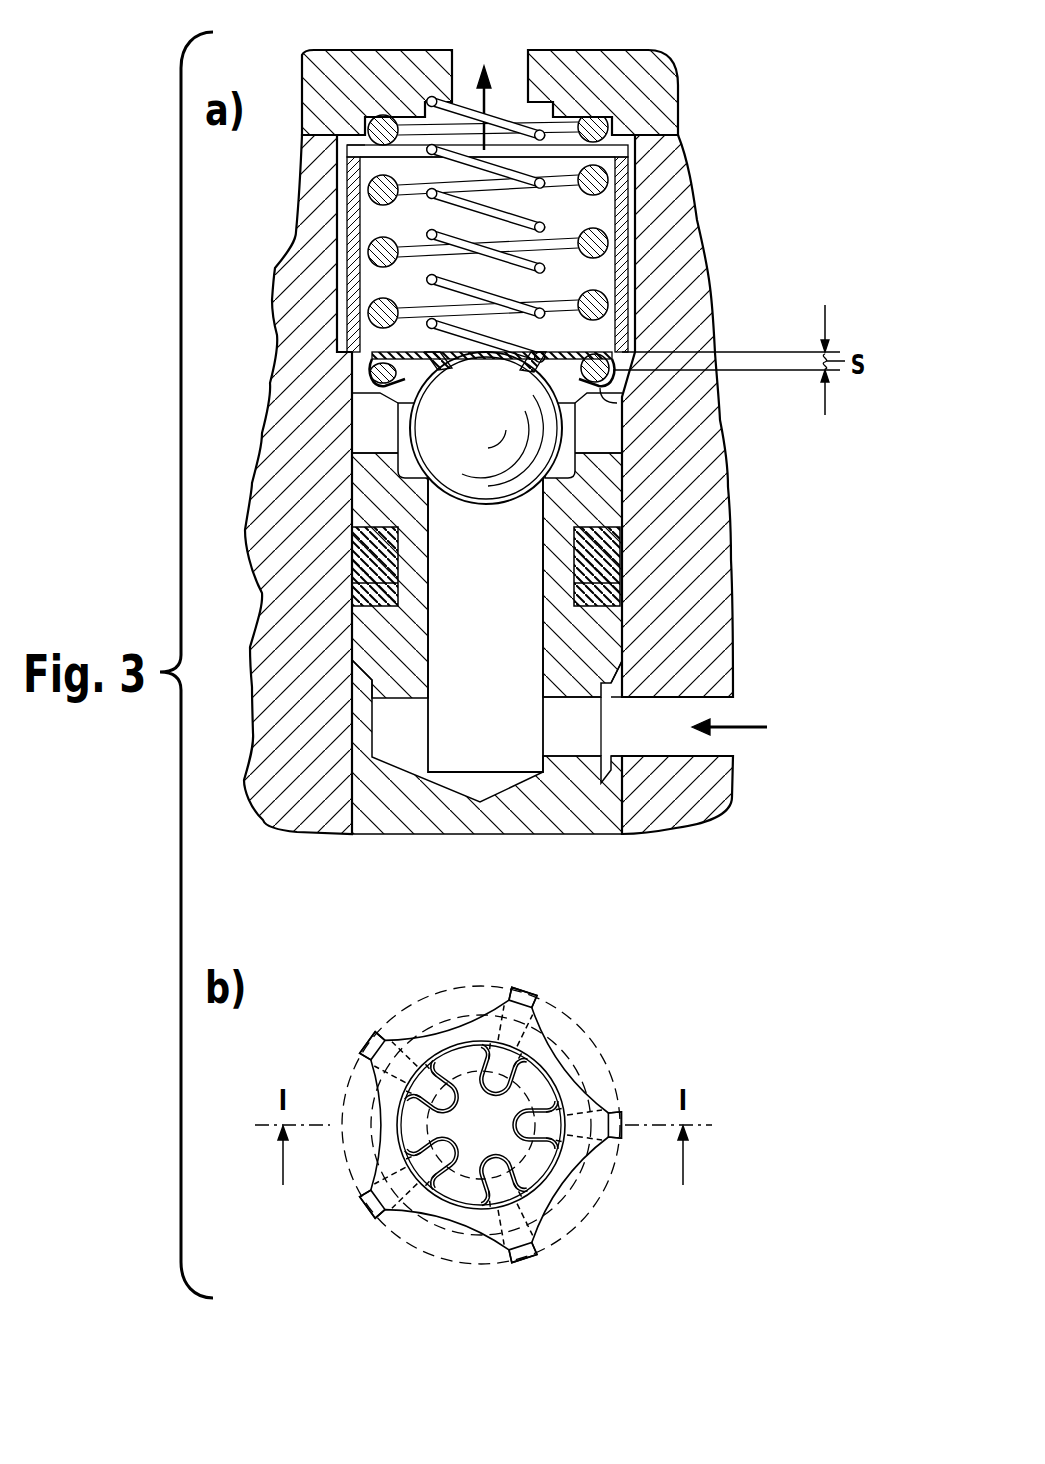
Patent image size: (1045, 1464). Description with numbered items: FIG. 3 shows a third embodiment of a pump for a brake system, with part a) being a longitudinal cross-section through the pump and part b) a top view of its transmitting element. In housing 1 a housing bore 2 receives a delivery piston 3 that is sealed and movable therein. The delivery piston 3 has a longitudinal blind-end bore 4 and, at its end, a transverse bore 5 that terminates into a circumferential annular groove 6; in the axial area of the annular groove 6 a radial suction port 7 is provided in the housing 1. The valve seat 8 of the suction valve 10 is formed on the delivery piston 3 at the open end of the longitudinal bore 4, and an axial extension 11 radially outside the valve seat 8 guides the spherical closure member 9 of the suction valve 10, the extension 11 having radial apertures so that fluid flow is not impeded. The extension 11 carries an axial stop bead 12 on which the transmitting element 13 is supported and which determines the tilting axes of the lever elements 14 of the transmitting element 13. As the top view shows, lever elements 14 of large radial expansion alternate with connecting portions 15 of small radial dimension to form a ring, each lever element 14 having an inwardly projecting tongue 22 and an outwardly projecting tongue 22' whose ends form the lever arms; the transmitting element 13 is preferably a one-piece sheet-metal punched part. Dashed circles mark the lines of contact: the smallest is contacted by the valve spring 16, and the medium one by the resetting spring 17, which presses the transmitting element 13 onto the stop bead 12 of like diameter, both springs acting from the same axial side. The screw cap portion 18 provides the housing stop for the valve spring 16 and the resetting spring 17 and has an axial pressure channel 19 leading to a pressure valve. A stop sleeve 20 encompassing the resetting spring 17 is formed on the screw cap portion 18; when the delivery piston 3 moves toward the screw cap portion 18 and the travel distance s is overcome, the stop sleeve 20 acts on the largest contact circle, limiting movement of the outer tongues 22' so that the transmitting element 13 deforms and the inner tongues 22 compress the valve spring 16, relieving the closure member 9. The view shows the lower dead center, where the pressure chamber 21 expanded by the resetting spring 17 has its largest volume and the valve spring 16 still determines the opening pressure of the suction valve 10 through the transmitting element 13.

The housing 1 is at (694, 638).
The housing bore 2 is at (611, 686).
The delivery piston 3 is at (554, 811).
The longitudinal blind-end bore 4 is at (478, 650).
The transverse bore 5 is at (565, 738).
The annular groove 6 is at (606, 765).
The radial suction port 7 is at (733, 711).
The valve seat 8 is at (547, 486).
The closure member 9 is at (487, 506).
The suction valve 10 is at (565, 469).
The axial extension 11 is at (600, 433).
The stop bead 12 is at (612, 414).
The transmitting element 13 is at (640, 352).
The lever elements 14 is at (380, 382).
The connecting portions 15 is at (383, 368).
The valve spring 16 is at (598, 268).
The resetting spring 17 is at (600, 330).
The screw cap portion 18 is at (657, 112).
The axial pressure channel 19 is at (510, 55).
The stop sleeve 20 is at (625, 243).
The pressure chamber 21 is at (587, 212).
The internal tongue 22 is at (515, 1117).
The tabs 22' is at (524, 1112).